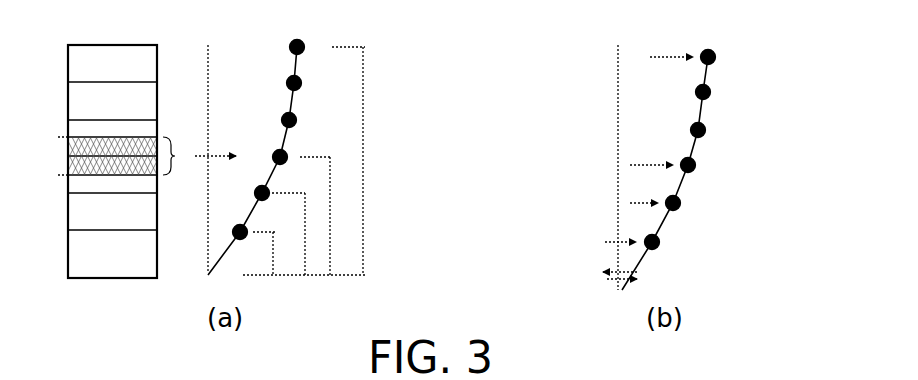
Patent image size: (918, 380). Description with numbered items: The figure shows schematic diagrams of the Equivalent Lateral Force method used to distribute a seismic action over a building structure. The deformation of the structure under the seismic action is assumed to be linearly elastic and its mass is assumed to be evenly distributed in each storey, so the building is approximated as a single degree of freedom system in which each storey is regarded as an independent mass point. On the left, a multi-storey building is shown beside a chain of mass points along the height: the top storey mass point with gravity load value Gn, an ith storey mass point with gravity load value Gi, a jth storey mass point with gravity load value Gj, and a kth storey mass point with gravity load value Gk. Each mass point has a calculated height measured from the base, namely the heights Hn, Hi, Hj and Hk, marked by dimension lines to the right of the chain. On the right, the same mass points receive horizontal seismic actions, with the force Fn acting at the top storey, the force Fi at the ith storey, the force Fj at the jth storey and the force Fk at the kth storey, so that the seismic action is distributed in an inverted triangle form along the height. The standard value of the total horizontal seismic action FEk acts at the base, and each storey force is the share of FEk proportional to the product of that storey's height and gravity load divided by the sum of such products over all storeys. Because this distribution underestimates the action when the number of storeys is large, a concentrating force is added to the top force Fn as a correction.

The gravity load value of the top storey mass point Gn is at (286, 48).
The gravity load value of the ith storey mass point Gi is at (268, 158).
The gravity load value of the jth storey mass point Gj is at (250, 193).
The gravity load value of the kth storey mass point Gk is at (230, 229).
The calculated height of the top storey mass point Hn is at (347, 160).
The calculated height of the ith storey mass point Hi is at (316, 214).
The calculated height of the jth storey mass point Hj is at (288, 237).
The calculated height of the kth storey mass point Hk is at (258, 257).
The horizontal seismic action on the top storey mass point Fn is at (664, 46).
The horizontal seismic action on the ith storey mass point Fi is at (651, 153).
The horizontal seismic action on the jth storey mass point Fj is at (644, 192).
The horizontal seismic action on the kth storey mass point Fk is at (620, 231).
The standard value of the total horizontal seismic action FEk is at (633, 278).